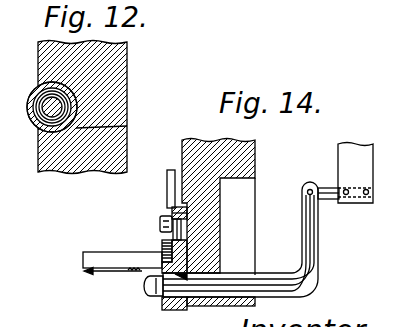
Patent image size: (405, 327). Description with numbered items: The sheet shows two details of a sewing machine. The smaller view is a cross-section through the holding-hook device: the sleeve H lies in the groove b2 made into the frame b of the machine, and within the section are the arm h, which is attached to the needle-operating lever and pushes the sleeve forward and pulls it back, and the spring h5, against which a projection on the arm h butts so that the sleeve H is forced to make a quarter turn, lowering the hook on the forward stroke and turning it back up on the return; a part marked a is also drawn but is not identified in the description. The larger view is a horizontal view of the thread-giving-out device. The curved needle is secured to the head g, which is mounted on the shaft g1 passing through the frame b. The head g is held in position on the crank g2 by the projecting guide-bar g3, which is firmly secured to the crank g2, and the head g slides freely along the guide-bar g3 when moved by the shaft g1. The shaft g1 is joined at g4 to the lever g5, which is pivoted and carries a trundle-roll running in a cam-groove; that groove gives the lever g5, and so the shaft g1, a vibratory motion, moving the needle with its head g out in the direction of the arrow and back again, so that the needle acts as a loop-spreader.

In FIG. 12, the wall / block a is at (64, 109).
In FIG. 12, the sleeve H is at (31, 88).
In FIG. 12, the spring h5 is at (33, 104).
In FIG. 12, the arm h is at (37, 120).
In FIG. 12, the groove b2 is at (127, 126).
In FIG. 14, the frame b is at (255, 177).
In FIG. 14, the head g is at (160, 304).
In FIG. 14, the shaft g1 is at (266, 286).
In FIG. 14, the crank g2 is at (172, 214).
In FIG. 14, the guide-bar g3 is at (112, 259).
In FIG. 14, the joint g4 is at (320, 170).
In FIG. 14, the lever g5 is at (355, 173).